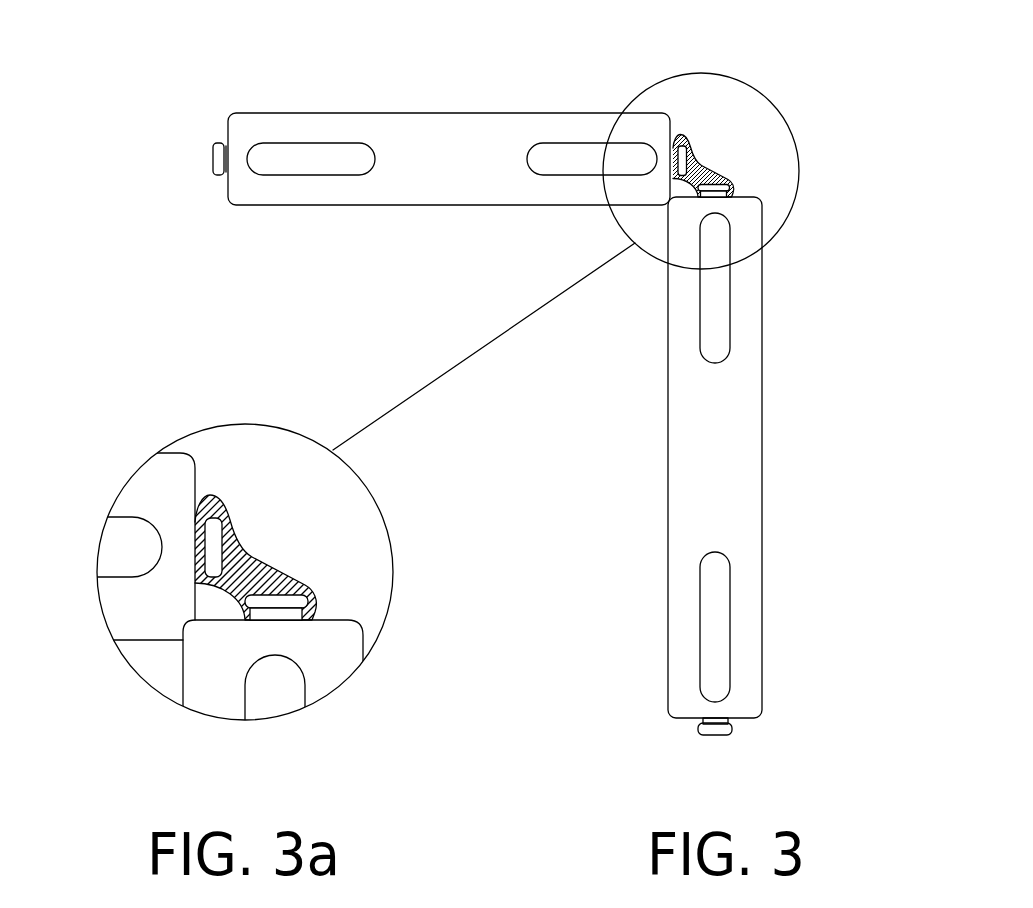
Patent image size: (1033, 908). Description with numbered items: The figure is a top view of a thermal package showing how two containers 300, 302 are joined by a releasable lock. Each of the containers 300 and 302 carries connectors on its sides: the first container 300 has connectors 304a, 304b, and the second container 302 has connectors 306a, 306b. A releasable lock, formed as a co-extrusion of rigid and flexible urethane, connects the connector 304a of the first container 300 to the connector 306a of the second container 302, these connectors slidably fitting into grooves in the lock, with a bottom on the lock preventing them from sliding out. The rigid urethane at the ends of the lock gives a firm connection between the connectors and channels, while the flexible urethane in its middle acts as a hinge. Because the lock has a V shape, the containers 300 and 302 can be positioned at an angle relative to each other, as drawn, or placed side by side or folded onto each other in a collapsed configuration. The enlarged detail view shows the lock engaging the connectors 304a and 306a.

The container 300 is at (442, 112).
The container 302 is at (745, 442).
The connector 304a is at (213, 157).
The connector 304b is at (283, 155).
The connector 306a is at (733, 190).
The connector 306b is at (710, 300).